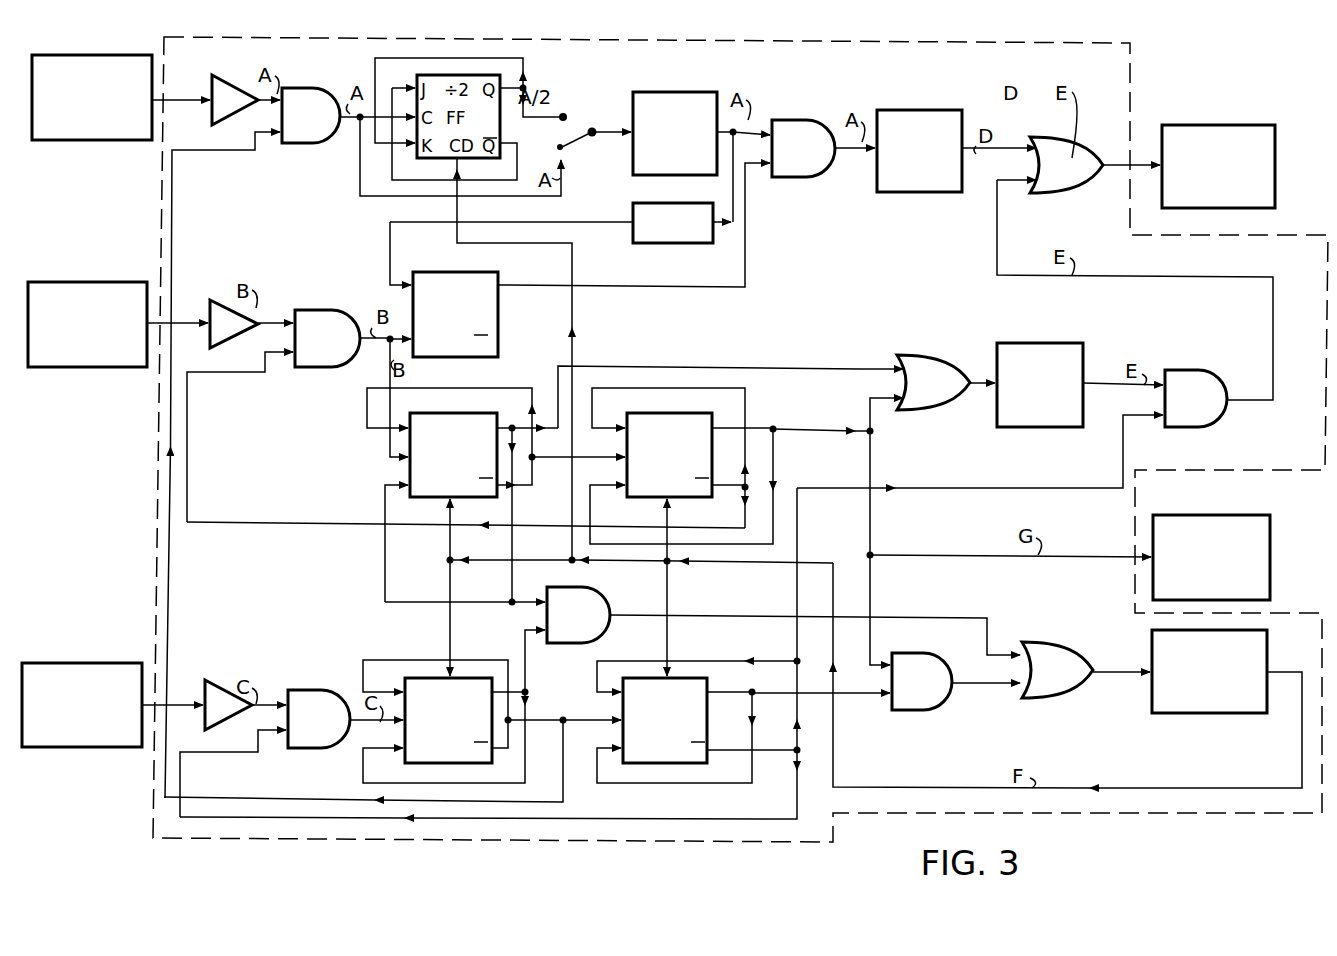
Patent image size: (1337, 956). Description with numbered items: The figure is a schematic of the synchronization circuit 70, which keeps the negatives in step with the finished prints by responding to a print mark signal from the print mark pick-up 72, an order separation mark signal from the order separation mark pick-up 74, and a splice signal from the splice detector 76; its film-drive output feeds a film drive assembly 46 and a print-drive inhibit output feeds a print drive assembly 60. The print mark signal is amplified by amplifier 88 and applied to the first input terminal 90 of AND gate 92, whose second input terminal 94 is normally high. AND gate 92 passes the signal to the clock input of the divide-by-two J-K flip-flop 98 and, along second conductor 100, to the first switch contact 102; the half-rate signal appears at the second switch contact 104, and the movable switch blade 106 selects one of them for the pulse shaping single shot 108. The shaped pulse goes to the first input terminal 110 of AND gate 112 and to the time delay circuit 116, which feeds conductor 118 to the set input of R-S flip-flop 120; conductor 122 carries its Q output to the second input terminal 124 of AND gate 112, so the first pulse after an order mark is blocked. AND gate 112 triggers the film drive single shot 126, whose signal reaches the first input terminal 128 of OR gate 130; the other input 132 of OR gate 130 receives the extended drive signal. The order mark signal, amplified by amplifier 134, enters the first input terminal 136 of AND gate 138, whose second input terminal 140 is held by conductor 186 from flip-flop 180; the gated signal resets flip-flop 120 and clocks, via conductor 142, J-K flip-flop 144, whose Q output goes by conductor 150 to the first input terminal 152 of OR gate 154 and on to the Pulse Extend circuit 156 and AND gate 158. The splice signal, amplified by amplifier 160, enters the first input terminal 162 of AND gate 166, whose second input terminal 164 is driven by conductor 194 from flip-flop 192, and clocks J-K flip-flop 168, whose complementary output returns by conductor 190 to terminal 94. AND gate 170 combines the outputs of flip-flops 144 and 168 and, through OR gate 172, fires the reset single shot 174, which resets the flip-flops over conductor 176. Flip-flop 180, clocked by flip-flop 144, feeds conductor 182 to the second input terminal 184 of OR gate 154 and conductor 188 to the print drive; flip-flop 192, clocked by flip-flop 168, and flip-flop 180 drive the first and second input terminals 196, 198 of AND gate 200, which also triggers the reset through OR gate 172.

The film drive assembly 46 is at (1250, 125).
The print drive assembly 60 is at (1257, 544).
The synchronization circuit 70 is at (1195, 820).
The print mark pick-up 72 is at (100, 142).
The order separation mark pick-up 74 is at (135, 366).
The splice detector 76 is at (122, 748).
The amplifier 88 is at (222, 82).
The first input terminal 90 is at (268, 112).
The AND gate 92 is at (318, 96).
The second input terminal 94 is at (262, 142).
The J-K flip-flop 98 is at (524, 80).
The second conductor 100 is at (360, 190).
The first switch contact 102 is at (565, 152).
The second switch contact 104 is at (567, 112).
The movable switch blade 106 is at (590, 128).
The pulse shaping single shot 108 is at (680, 92).
The first input terminal 110 is at (762, 130).
The AND gate 112 is at (792, 132).
The time delay circuit 116 is at (633, 215).
The conductor 118 is at (390, 250).
The R-S flip-flop 120 is at (505, 320).
The conductor 122 is at (640, 285).
The second input terminal 124 is at (750, 170).
The film drive single shot 126 is at (935, 110).
The first input terminal 128 is at (1034, 142).
The OR gate 130 is at (1070, 186).
The input line 132 is at (1026, 184).
The amplifier 134 is at (215, 313).
The first input terminal 136 is at (285, 320).
The AND gate 138 is at (333, 320).
The second input terminal 140 is at (285, 360).
The conductor 142 is at (388, 455).
The J-K flip-flop 144 is at (447, 418).
The conductor 150 is at (670, 366).
The first input terminal 152 is at (898, 366).
The OR gate 154 is at (915, 362).
The Pulse Extend circuit 156 is at (1060, 343).
The AND gate 158 is at (1200, 372).
The amplifier 160 is at (214, 680).
The first input terminal 162 is at (284, 702).
The second input terminal 164 is at (278, 733).
The AND gate 166 is at (312, 700).
The J-K flip-flop 168 is at (446, 678).
The AND gate 170 is at (602, 604).
The OR gate 172 is at (1060, 658).
The reset single shot 174 is at (1180, 715).
The conductor 176 is at (1160, 788).
The flip-flop 180 is at (655, 418).
The conductor 182 is at (840, 427).
The second input terminal 184 is at (893, 402).
The conductor 186 is at (335, 523).
The conductor 188 is at (982, 553).
The conductor 190 is at (312, 797).
The flip-flop 192 is at (666, 678).
The conductor 194 is at (717, 818).
The first input terminal 196 is at (893, 660).
The second input terminal 198 is at (887, 698).
The AND gate 200 is at (930, 708).